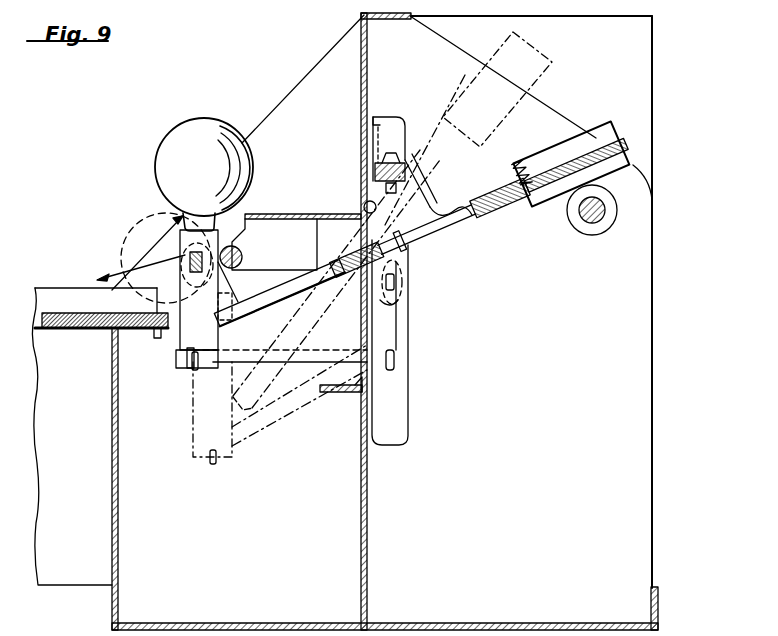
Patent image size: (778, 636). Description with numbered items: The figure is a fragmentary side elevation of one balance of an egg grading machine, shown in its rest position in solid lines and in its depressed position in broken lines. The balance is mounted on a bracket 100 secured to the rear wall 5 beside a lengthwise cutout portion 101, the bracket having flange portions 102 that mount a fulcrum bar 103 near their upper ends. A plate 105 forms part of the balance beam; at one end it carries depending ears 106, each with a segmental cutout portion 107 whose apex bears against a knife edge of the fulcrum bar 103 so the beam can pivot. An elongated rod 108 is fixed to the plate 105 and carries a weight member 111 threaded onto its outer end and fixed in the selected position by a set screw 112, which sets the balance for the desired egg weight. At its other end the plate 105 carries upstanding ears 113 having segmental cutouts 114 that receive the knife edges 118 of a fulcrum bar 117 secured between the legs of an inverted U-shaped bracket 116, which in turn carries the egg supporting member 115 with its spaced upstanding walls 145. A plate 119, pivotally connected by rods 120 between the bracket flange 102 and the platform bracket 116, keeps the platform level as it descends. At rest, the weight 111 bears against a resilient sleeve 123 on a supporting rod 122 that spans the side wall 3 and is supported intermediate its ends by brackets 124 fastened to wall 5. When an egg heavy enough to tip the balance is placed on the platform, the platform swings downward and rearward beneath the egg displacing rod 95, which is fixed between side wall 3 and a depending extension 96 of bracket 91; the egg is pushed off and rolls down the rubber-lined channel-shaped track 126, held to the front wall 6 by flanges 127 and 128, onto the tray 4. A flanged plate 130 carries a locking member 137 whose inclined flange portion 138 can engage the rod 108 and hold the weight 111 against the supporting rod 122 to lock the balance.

The side wall 3 is at (640, 75).
The tray 4 is at (72, 334).
The rear wall 5 is at (372, 515).
The front wall 6 is at (118, 518).
The bracket 91 is at (300, 215).
The rod 95 is at (242, 255).
The depending extension 96 is at (312, 233).
The bracket 100 is at (373, 392).
The cutout portion 101 is at (358, 384).
The flange portions 102 is at (387, 333).
The fulcrum bar 103 is at (393, 308).
The plate 105 is at (272, 304).
The depending ears 106 is at (398, 260).
The segmental cutout portion 107 is at (371, 327).
The rod 108 is at (475, 197).
The weight member 111 is at (600, 124).
The set screw 112 is at (525, 152).
The upstanding ears 113 is at (224, 280).
The segmental cutout portion 114 is at (180, 242).
The egg supporting member 115 is at (168, 213).
The inverted U-shaped bracket 116 is at (185, 364).
The fulcrum bar 117 is at (190, 262).
The knife edges 118 is at (193, 270).
The plate 119 is at (308, 357).
The rods 120 is at (194, 372).
The supporting rod 122 is at (586, 219).
The sleeves 123 is at (595, 224).
The brackets 124 is at (637, 318).
The channel-shaped track 126 is at (105, 312).
The flange 127 is at (152, 329).
The flange 128 is at (163, 340).
The flanged plate 130 is at (378, 133).
The locking member 137 is at (420, 178).
The inclined flange portion 138 is at (465, 214).
The upstanding walls 145 is at (240, 210).